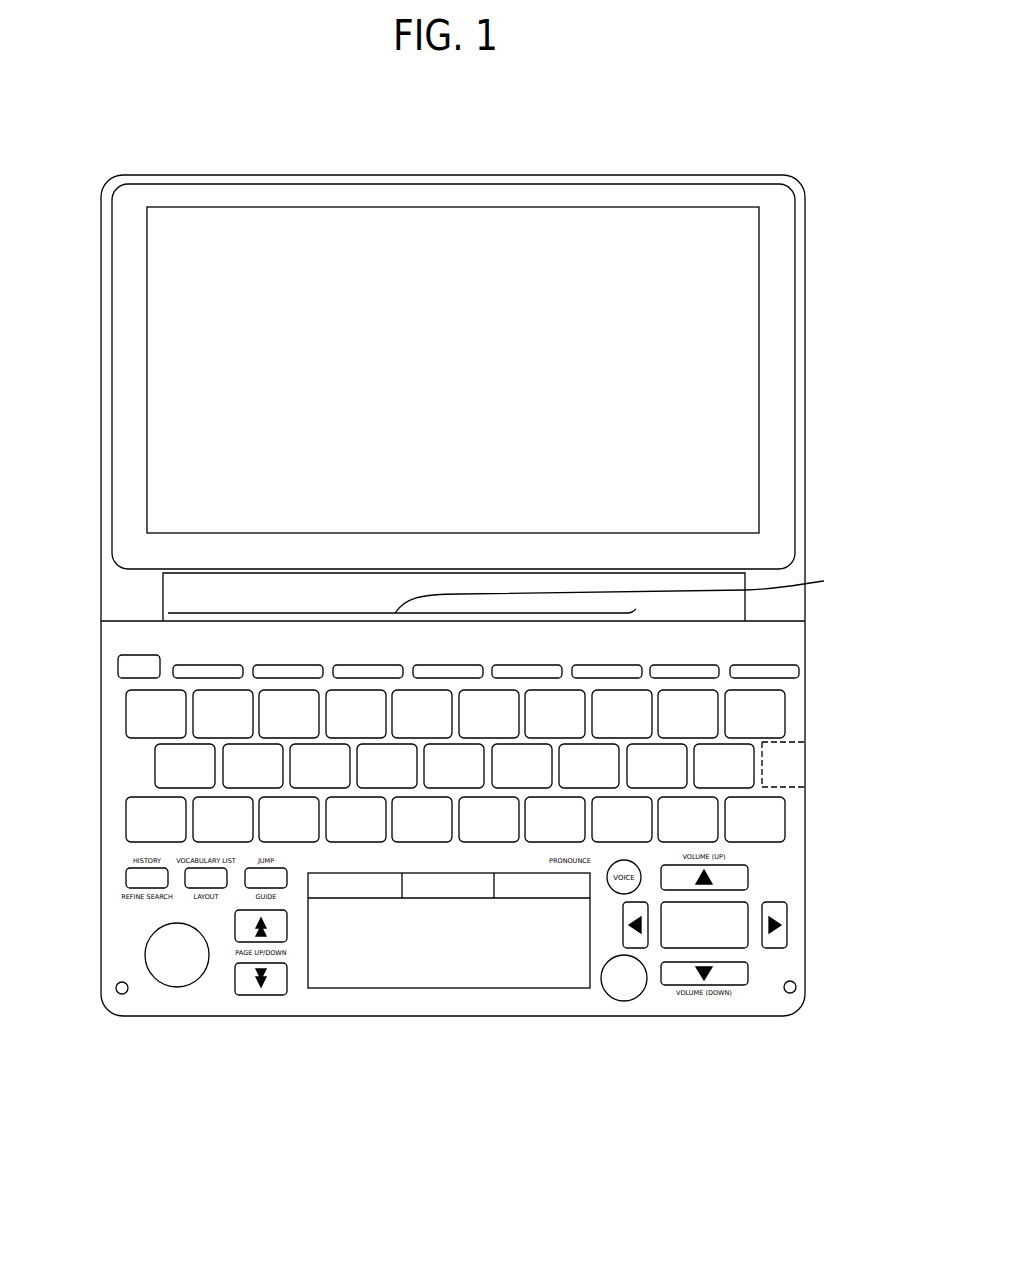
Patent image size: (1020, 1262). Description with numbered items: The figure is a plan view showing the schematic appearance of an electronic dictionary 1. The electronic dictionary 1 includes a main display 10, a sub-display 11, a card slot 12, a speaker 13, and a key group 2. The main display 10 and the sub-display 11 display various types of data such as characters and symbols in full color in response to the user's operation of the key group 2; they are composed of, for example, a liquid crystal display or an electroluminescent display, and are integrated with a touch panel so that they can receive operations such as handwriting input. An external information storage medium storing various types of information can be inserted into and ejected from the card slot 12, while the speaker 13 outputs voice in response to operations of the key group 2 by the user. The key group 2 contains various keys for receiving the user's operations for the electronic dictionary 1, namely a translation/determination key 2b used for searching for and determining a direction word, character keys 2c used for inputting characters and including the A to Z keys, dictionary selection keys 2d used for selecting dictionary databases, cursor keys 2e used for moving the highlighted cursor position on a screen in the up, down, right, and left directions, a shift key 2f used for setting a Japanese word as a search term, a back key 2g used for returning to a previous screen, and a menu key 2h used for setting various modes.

The electronic dictionary 1 is at (158, 141).
The key group 2 is at (93, 632).
The main display 10 is at (760, 225).
The sub-display 11 is at (525, 988).
The card slot 12 is at (790, 790).
The speaker 13 is at (181, 987).
The translation/determination key 2b is at (746, 948).
The character keys 2c is at (97, 743).
The dictionary selection keys 2d is at (625, 592).
The cursor keys 2e is at (745, 985).
The shift key 2f is at (126, 821).
The back key 2g is at (630, 1001).
The menu key 2h is at (719, 678).